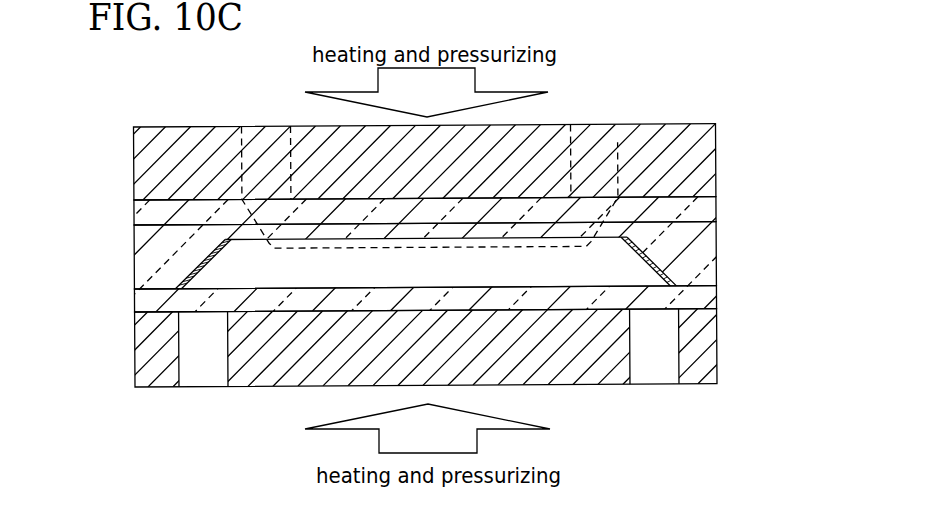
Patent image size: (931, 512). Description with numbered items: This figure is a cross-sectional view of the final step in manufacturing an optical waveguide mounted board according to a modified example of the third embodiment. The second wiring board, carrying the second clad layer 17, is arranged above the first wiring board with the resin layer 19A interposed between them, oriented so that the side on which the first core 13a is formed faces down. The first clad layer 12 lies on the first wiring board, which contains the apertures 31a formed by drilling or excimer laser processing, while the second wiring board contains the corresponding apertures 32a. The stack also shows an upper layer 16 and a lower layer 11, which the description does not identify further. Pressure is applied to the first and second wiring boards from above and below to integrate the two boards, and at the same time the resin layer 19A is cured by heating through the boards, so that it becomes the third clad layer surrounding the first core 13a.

The upper pressing plate 16 is at (712, 160).
The second clad layer 17 is at (707, 208).
The resin layer 19A is at (707, 252).
The first clad layer 12 is at (712, 294).
The lower plate 11 is at (707, 338).
The first core 13a is at (593, 266).
The aperture 32a is at (619, 142).
The aperture 31a is at (230, 363).